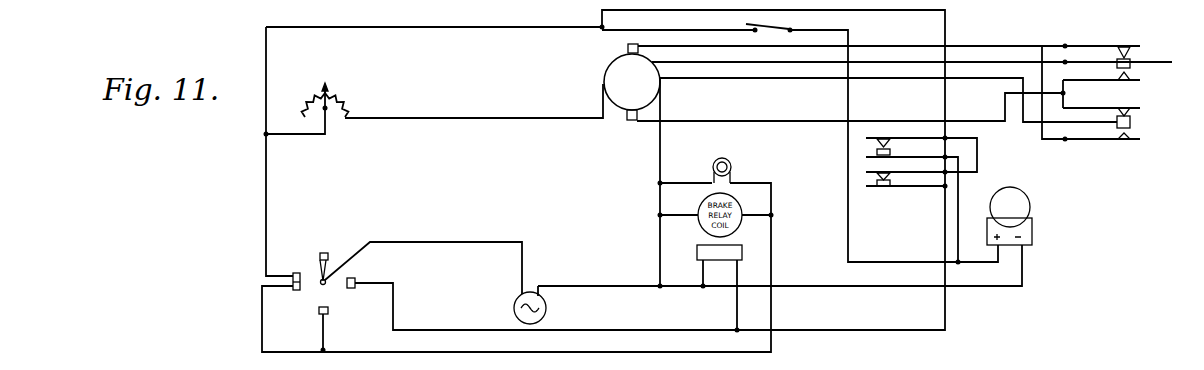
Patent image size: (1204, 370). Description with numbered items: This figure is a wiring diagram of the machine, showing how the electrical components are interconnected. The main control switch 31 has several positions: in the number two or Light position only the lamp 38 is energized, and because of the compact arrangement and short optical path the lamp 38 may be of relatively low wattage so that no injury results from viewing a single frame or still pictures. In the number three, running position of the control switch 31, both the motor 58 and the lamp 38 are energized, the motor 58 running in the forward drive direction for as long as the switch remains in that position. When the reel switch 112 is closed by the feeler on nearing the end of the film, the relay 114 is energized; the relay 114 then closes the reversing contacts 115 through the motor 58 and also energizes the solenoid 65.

The main control switch 31 is at (318, 288).
The lamp 38 is at (723, 158).
The motor 58 is at (604, 81).
The solenoid 65 is at (697, 252).
The reel switch 112 is at (785, 26).
The relay 114 is at (1025, 208).
The reversing contacts 115 is at (1133, 117).